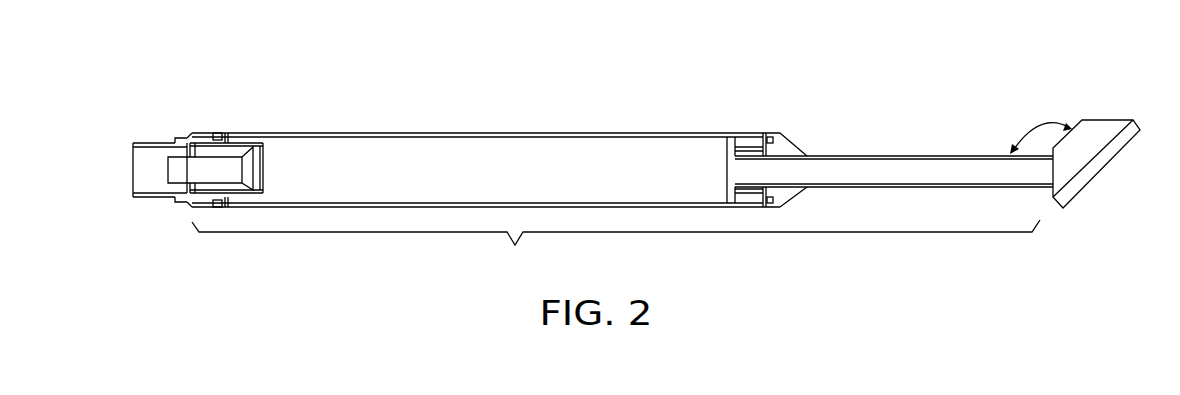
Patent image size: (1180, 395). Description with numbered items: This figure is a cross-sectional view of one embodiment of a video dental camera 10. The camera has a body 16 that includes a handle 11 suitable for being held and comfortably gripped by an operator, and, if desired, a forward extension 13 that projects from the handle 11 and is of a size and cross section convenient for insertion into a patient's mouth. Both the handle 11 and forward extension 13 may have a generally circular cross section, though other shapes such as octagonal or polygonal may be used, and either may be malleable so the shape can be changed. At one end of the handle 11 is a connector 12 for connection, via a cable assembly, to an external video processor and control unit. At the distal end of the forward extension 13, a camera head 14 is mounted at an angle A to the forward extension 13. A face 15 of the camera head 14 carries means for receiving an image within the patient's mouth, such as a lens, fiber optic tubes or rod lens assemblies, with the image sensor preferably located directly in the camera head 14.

The video dental camera 10 is at (588, 133).
The handle 11 is at (338, 133).
The connector 12 is at (132, 188).
The forward extension 13 is at (917, 158).
The camera head 14 is at (1111, 120).
The face 15 is at (1075, 128).
The body 16 is at (616, 251).
The angle A is at (1031, 123).